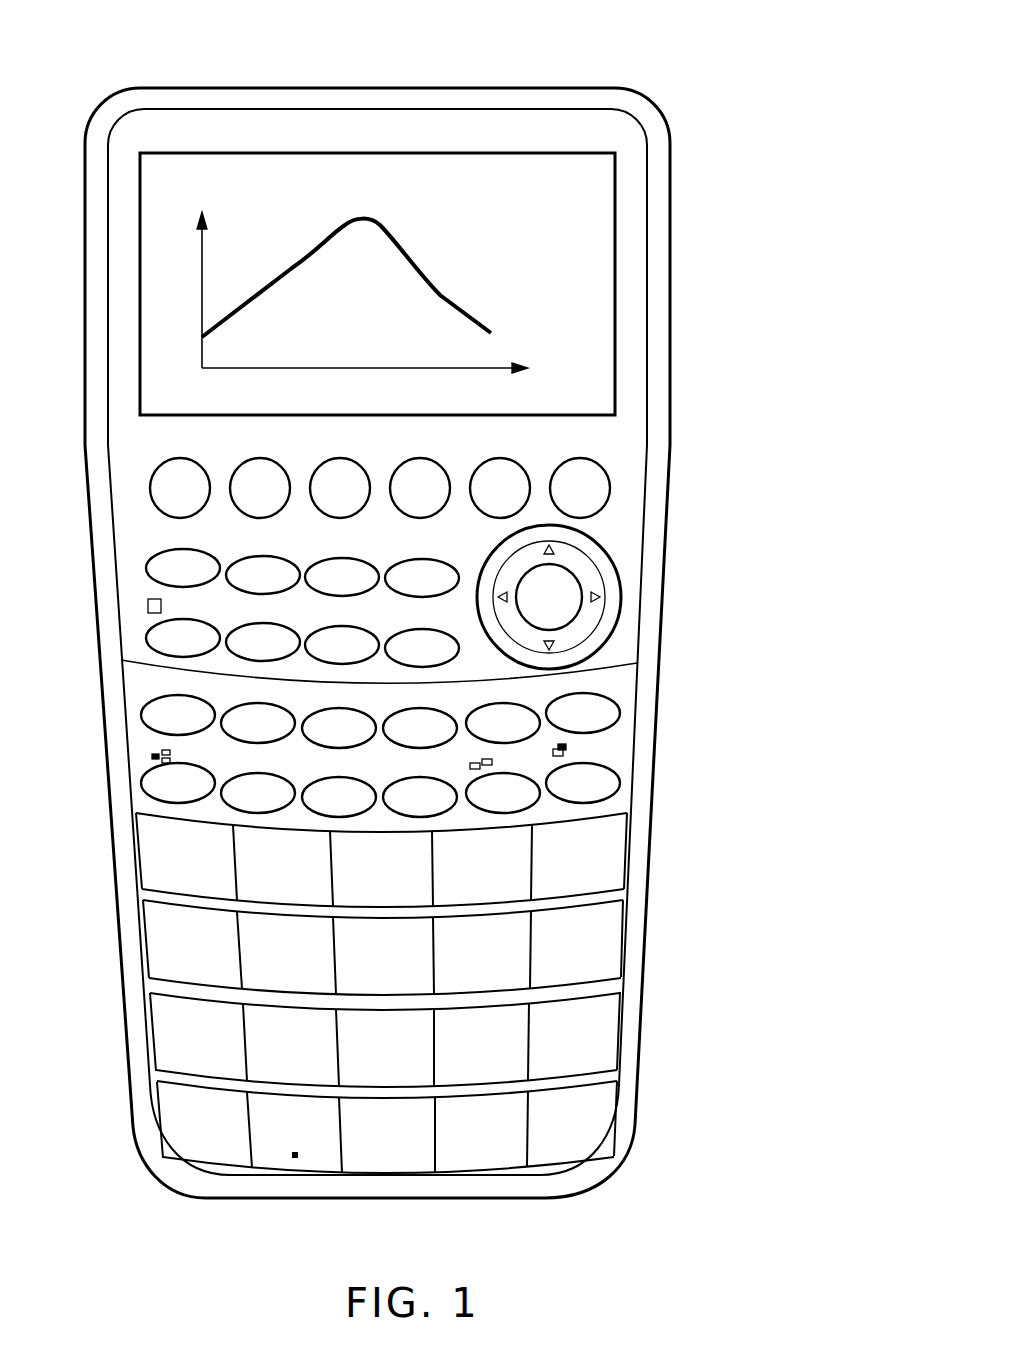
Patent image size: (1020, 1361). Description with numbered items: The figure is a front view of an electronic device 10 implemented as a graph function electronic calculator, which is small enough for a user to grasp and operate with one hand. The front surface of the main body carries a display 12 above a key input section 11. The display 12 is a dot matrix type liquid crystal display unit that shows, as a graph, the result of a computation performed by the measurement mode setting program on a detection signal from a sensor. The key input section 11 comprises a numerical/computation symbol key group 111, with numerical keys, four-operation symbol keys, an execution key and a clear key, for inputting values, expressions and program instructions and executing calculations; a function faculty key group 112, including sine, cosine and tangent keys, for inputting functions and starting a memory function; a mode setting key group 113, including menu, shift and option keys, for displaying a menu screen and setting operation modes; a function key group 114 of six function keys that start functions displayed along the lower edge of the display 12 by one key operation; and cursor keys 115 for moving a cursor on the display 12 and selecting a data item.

The electronic device 10 is at (510, 86).
The key input section 11 is at (749, 447).
The display 12 is at (617, 323).
The numerical/computation symbol key group 111 is at (684, 802).
The function faculty key group 112 is at (684, 608).
The mode setting key group 113 is at (678, 537).
The function key group 114 is at (678, 447).
The cursor keys 115 is at (577, 572).